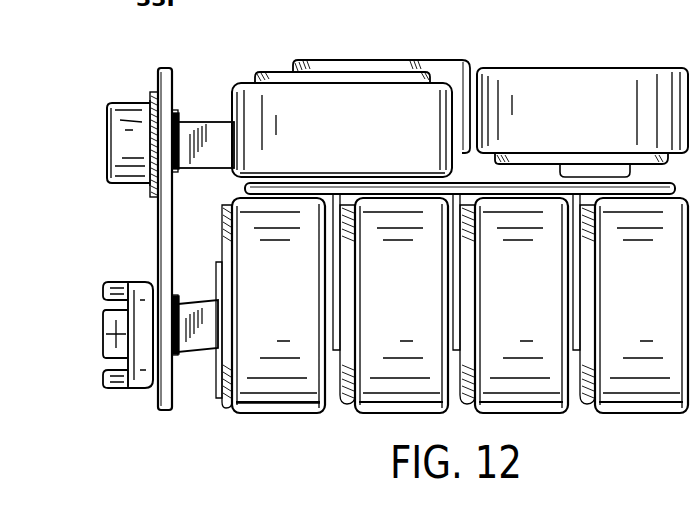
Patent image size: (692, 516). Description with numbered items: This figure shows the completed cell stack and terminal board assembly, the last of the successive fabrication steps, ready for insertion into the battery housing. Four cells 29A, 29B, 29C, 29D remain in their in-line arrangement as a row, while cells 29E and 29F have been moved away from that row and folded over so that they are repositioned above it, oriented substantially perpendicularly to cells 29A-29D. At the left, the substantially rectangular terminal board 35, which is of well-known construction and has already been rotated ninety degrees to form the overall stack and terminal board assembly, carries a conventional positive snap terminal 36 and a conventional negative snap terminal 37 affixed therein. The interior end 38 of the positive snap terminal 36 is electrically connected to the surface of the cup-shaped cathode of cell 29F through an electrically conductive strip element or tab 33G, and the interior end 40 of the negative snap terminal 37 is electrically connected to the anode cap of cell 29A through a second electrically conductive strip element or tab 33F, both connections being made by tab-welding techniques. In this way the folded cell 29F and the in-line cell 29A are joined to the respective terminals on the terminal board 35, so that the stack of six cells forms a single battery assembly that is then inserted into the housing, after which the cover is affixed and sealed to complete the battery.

The terminal board 35 is at (160, 402).
The positive snap terminal 36 is at (118, 135).
The negative snap terminal 37 is at (106, 324).
The interior end of positive snap terminal 38 is at (177, 116).
The interior end of negative snap terminal 40 is at (178, 297).
The electrically conductive strip element or tab 33G is at (205, 156).
The electrically conductive strip element or tab 33F is at (199, 352).
The cell 29A is at (299, 317).
The cell 29B is at (423, 317).
The cell 29C is at (546, 317).
The cell 29D is at (660, 317).
The cell 29E is at (588, 117).
The cell 29F is at (352, 116).